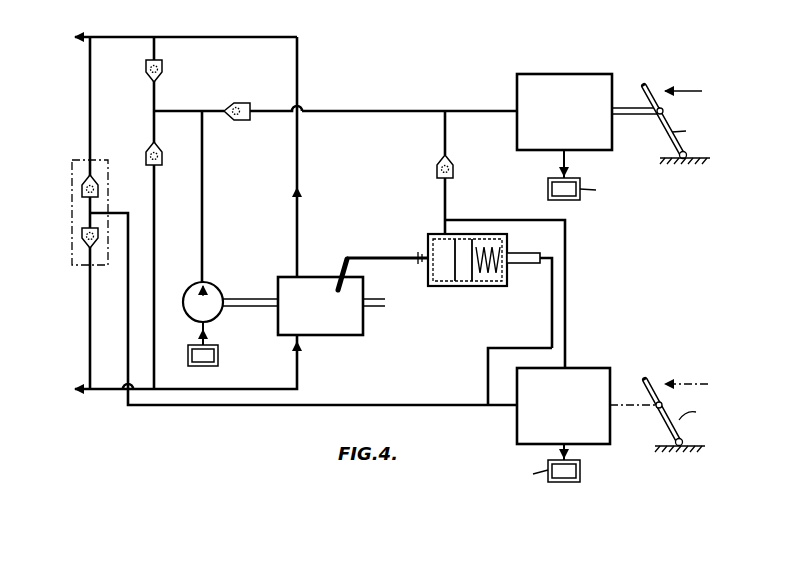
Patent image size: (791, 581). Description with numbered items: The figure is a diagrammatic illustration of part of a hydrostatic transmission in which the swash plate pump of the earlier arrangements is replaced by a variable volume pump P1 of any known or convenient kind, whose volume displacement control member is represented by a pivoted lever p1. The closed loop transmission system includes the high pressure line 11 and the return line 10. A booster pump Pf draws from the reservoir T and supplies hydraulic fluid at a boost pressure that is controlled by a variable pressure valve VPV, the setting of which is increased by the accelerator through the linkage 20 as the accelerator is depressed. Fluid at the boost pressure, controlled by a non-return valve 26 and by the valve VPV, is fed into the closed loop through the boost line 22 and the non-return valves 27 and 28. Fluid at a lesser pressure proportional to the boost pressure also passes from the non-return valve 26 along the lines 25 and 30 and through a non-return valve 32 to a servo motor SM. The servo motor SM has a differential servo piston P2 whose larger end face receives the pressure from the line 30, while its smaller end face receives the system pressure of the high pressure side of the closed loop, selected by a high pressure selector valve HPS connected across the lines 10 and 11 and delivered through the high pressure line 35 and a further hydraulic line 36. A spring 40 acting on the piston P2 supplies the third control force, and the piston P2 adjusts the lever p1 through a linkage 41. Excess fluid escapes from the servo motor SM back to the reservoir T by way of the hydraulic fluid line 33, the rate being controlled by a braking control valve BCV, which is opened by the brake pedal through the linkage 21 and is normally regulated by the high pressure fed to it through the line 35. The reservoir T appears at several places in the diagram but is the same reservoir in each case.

The hydraulic fluid line 10 is at (297, 371).
The hydraulic fluid line 11 is at (248, 37).
The boost line 22 is at (188, 111).
The hydraulic fluid line 25 is at (403, 111).
The non-return valve 26 is at (243, 103).
The non-return valve 27 is at (146, 71).
The non-return valve 28 is at (148, 150).
The hydraulic fluid line 30 is at (445, 134).
The non-return valve 32 is at (456, 163).
The hydraulic fluid line 33 is at (565, 262).
The high pressure hydraulic line 35 is at (428, 405).
The hydraulic line 36 is at (488, 366).
The spring 40 is at (488, 272).
The linkage 41 is at (390, 258).
The linkage 20 is at (626, 116).
The linkage 21 is at (626, 408).
The high pressure selector valve HPS is at (72, 183).
The variable pressure valve VPV is at (519, 74).
The braking control valve BCV is at (600, 368).
The servo motor SM is at (443, 288).
The booster pump Pf is at (216, 288).
The variable volume pump P1 is at (328, 338).
The pivoted lever p1 is at (338, 268).
The differential servo piston P2 is at (514, 246).
The reservoir T is at (218, 357).